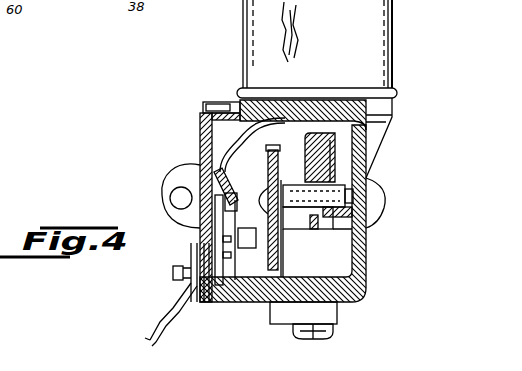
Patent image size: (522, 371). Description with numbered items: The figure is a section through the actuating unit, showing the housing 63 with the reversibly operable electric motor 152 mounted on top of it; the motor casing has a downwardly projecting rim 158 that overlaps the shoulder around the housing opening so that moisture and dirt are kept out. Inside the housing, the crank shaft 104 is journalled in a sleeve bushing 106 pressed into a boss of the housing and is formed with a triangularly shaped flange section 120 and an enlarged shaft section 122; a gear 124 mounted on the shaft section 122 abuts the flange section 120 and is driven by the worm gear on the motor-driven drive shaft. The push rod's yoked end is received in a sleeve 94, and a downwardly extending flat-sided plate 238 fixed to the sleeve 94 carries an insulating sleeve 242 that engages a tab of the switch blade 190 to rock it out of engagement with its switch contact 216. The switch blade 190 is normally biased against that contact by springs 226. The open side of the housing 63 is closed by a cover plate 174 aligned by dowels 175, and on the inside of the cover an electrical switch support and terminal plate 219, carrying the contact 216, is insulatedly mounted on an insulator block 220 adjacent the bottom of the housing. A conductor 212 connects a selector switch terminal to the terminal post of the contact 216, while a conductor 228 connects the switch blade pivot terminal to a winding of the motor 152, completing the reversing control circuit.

The electric motor 152 is at (396, 61).
The rim 158 is at (398, 97).
The gear 124 is at (360, 141).
The housing 63 is at (367, 280).
The crank shaft 104 is at (379, 188).
The cover plate 174 is at (200, 136).
The dowels 175 is at (214, 101).
The flange section 120 is at (317, 171).
The shaft section 122 is at (318, 185).
The plate 238 is at (308, 219).
The sleeve bushing 106 is at (317, 253).
The sleeve 94 is at (260, 211).
The conductor 228 is at (236, 149).
The switch blade 190 is at (236, 272).
The insulating sleeve 242 is at (244, 231).
The springs 226 is at (195, 231).
The insulator block 220 is at (209, 302).
The terminal plate 219 is at (228, 292).
The switch contact 216 is at (232, 296).
The conductor 212 is at (162, 337).